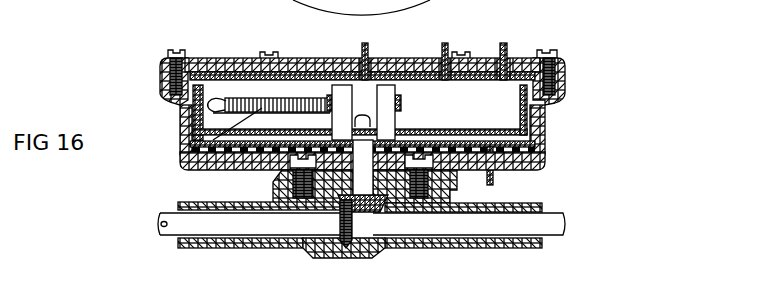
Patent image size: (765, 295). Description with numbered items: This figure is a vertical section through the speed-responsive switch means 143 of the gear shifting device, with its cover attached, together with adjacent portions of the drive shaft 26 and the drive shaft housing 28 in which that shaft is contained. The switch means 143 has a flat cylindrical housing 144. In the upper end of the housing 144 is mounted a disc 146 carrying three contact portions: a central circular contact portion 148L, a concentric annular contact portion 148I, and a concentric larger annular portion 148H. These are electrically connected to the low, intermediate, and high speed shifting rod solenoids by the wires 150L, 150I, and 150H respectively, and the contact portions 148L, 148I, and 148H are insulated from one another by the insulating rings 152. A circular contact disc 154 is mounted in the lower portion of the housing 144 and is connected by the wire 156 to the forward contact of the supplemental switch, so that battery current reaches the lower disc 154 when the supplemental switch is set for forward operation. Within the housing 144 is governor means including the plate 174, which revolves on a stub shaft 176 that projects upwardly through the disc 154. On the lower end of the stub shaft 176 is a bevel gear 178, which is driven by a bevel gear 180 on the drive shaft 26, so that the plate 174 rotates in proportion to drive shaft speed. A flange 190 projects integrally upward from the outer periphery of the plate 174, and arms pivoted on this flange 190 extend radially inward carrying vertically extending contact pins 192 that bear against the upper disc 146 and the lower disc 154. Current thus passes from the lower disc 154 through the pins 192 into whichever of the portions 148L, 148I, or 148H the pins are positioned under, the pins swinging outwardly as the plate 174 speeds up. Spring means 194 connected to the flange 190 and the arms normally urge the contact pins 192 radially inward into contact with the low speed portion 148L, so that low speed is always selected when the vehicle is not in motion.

The drive shaft 26 is at (550, 225).
The drive shaft housing 28 is at (217, 245).
The switch means 143 is at (178, 117).
The cylindrical housing 144 is at (530, 128).
The disc 146 is at (560, 63).
The central circular contact portion 148L is at (352, 78).
The concentric annular contact portion 148I is at (443, 60).
The concentric larger annular portion 148H is at (525, 60).
The wire 150L is at (362, 44).
The wire 150I is at (443, 43).
The wire 150H is at (505, 43).
The insulating rings 152 is at (413, 80).
The circular contact disc 154 is at (535, 148).
The wire 156 is at (493, 178).
The plate 174 is at (540, 127).
The stub shaft 176 is at (360, 162).
The bevel gear 178 is at (356, 204).
The bevel gear 180 is at (347, 245).
The flange 190 is at (560, 98).
The contact pins 192 is at (340, 122).
The spring means 194 is at (180, 157).